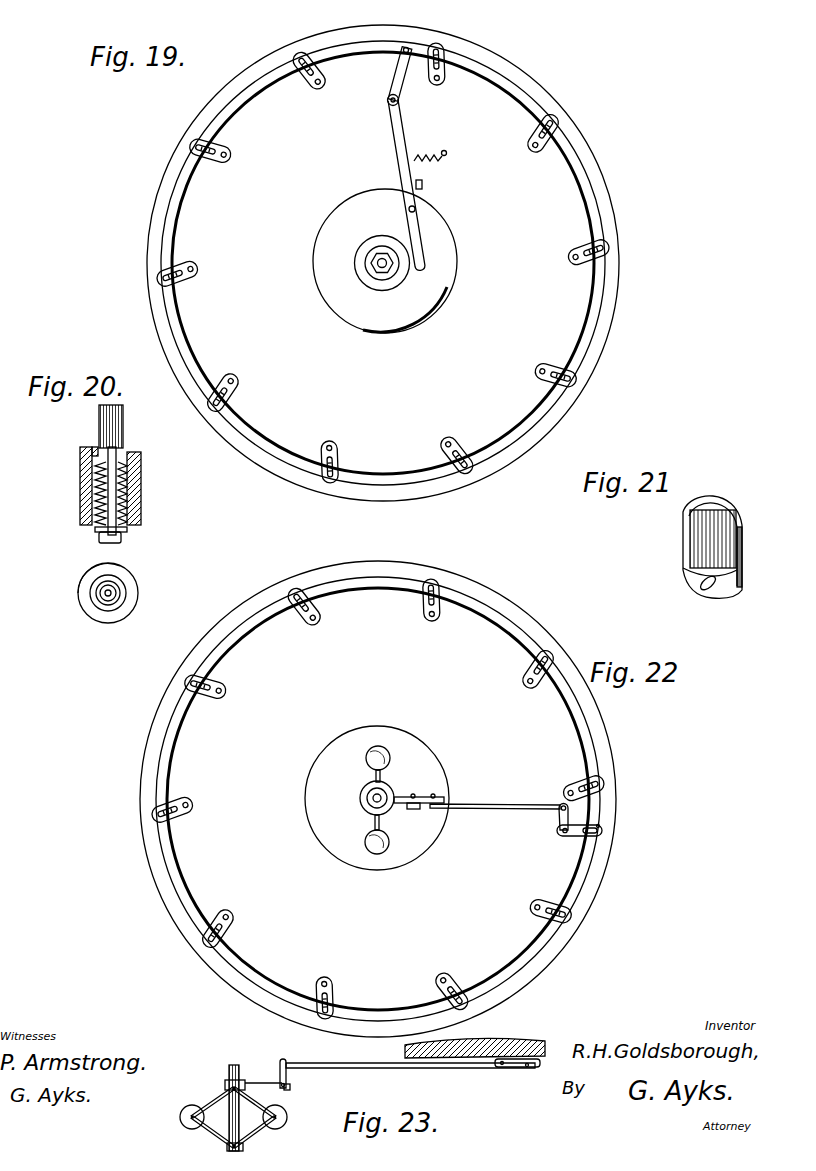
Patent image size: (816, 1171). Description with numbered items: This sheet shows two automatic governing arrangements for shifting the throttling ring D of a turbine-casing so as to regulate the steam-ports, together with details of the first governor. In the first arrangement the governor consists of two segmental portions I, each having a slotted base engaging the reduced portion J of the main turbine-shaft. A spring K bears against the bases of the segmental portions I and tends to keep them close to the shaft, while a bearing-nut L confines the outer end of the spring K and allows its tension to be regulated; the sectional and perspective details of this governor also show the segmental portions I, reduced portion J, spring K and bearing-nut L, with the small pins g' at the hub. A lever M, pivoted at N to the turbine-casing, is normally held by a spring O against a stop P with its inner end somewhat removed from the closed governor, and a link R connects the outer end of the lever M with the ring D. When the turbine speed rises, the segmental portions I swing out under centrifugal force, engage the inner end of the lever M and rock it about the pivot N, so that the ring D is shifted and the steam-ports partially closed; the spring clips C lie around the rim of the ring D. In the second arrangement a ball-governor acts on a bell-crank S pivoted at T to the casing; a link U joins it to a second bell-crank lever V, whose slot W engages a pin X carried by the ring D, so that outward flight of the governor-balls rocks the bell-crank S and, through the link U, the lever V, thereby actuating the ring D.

In FIG. 19, the spring clip C is at (438, 73).
In FIG. 22, the spring clip C is at (303, 605).
In FIG. 19, the ring D is at (580, 184).
In FIG. 22, the ring D is at (512, 633).
In FIG. 23, the ring D is at (533, 1056).
In FIG. 19, the segmental portions I is at (373, 241).
In FIG. 20, the segmental portions I is at (112, 537).
In FIG. 21, the segmental portions I is at (743, 534).
In FIG. 20, the reduced portion of the main turbine-shaft J is at (142, 463).
In FIG. 20, the spring K is at (128, 500).
In FIG. 19, the bearing-nut L is at (385, 272).
In FIG. 20, the bearing-nut L is at (123, 540).
In FIG. 19, the pin g' is at (382, 263).
In FIG. 19, the link R is at (393, 80).
In FIG. 19, the lever M is at (396, 160).
In FIG. 19, the spring O is at (447, 154).
In FIG. 19, the stop P is at (423, 186).
In FIG. 19, the pivot N is at (416, 210).
In FIG. 22, the bell-crank S is at (424, 800).
In FIG. 23, the bell-crank S is at (287, 1077).
In FIG. 22, the pivot T is at (413, 796).
In FIG. 23, the pivot T is at (290, 1087).
In FIG. 22, the link U is at (487, 806).
In FIG. 23, the link U is at (374, 1068).
In FIG. 22, the second bell-crank lever V is at (557, 820).
In FIG. 23, the second bell-crank lever V is at (517, 1077).
In FIG. 22, the slot W is at (603, 834).
In FIG. 22, the pin X is at (600, 826).
In FIG. 23, the pin X is at (529, 1067).